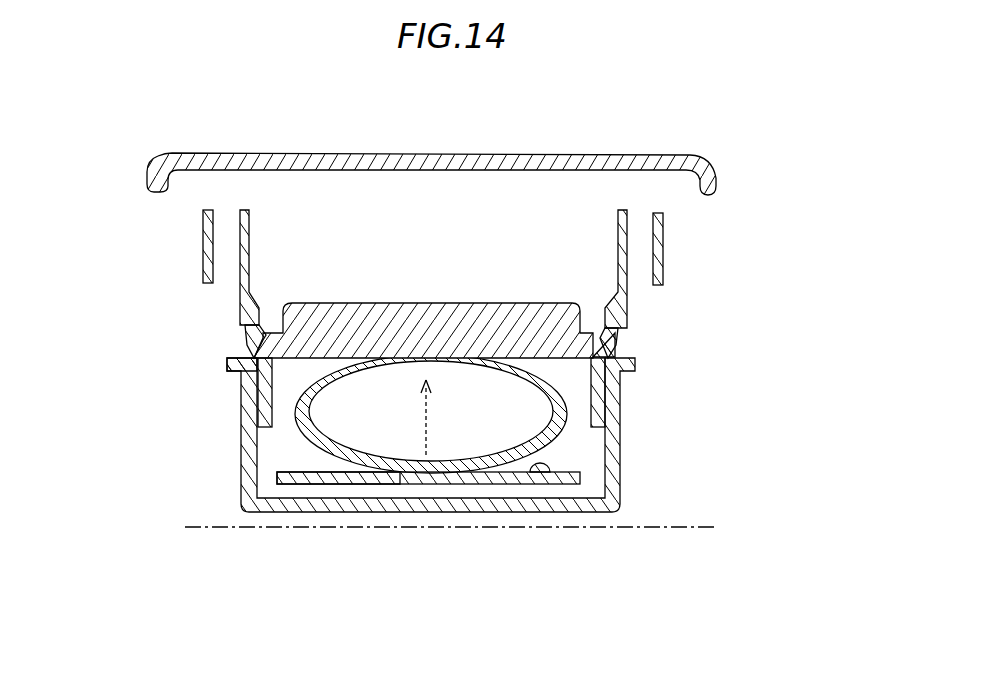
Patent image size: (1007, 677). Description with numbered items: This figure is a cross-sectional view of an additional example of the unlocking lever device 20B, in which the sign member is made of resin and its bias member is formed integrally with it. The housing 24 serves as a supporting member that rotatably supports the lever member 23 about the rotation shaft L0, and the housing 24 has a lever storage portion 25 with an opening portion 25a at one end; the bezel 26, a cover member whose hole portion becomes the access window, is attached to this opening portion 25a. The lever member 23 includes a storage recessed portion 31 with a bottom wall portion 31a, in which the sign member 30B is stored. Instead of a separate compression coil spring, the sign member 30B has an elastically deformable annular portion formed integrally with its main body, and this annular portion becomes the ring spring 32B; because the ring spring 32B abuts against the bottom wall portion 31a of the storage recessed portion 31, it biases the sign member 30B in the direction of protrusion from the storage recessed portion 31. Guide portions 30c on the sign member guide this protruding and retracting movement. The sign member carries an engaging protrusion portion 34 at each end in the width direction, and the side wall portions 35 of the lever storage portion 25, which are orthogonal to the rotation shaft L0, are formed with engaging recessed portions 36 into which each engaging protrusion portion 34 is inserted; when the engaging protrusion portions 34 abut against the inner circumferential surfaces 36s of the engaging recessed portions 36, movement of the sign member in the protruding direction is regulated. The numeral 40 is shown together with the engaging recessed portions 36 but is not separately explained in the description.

The unlocking lever device 20B is at (126, 145).
The bezel 26 is at (630, 153).
The opening portion 25a is at (628, 211).
The side wall portions 35 is at (242, 248).
The sign member 30B is at (338, 303).
The engaging recessed portions 36 is at (430, 336).
The inner circumferential surfaces 36s is at (431, 341).
The stopper portion 40 is at (258, 338).
The engaging protrusion portion 34 is at (252, 352).
The guide portions 30c is at (262, 403).
The ring spring 32B is at (545, 431).
The lever storage portion 25 is at (480, 435).
The housing 24 is at (622, 491).
The bottom wall portion 31a is at (312, 485).
The lever member 23 is at (462, 486).
The storage recessed portion 31 is at (548, 477).
The rotation shaft L0 is at (672, 531).